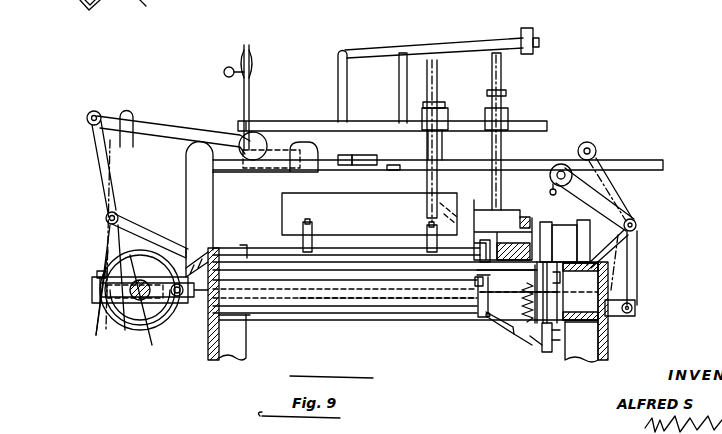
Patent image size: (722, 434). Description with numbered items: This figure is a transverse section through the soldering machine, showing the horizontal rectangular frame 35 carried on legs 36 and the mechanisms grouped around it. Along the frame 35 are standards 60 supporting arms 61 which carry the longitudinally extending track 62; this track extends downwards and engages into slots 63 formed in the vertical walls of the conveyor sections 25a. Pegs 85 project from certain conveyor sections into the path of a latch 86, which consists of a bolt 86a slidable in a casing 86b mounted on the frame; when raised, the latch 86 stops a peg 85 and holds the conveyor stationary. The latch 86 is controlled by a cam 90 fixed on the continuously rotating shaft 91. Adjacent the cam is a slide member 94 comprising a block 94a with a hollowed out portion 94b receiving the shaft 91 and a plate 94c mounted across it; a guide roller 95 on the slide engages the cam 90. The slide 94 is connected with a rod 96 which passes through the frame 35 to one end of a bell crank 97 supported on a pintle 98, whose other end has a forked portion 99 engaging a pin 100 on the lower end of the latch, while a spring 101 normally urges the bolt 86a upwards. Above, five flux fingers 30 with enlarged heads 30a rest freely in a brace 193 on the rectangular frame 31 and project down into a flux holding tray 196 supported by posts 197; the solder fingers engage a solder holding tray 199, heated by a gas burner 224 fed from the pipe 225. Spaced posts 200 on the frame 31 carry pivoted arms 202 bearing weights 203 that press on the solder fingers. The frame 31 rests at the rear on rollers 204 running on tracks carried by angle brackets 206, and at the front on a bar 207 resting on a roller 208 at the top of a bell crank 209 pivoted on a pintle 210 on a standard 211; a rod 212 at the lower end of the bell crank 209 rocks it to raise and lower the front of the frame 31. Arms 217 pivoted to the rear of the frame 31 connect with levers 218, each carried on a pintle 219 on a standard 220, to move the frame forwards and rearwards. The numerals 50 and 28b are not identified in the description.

The conveyor section 25a is at (157, 11).
The arm 217 is at (152, 128).
The lever 218 is at (105, 174).
The pintle 219 is at (120, 214).
The standard 220 is at (132, 230).
The plate 94c is at (98, 272).
The shaft 91 is at (92, 292).
The cam 90 is at (128, 297).
The slide member 94 is at (147, 300).
The block 94a is at (102, 317).
The hollowed out portion 94b is at (160, 297).
The guide roller 95 is at (180, 304).
The frame 35 is at (251, 318).
The leg 36 is at (230, 347).
The rod 96 is at (345, 300).
The pintle 98 is at (478, 325).
The bell crank 97 is at (510, 332).
The forked portion 99 is at (556, 350).
The pin 100 is at (544, 350).
The housing 50 is at (506, 294).
The spring 101 is at (521, 291).
The rod 212 is at (440, 300).
The casing 86b is at (556, 284).
The bolt 86a is at (581, 334).
The peg 85 is at (546, 247).
The latch 86 is at (552, 258).
The standard 60 is at (582, 246).
The arm 61 is at (555, 192).
The track 62 is at (522, 216).
The slot 63 is at (530, 218).
The post 28b is at (480, 247).
The flux holding tray 196 is at (283, 213).
The solder holding tray 199 is at (446, 216).
The flux finger 30 is at (500, 78).
The enlarged head 30a is at (442, 103).
The frame 31 is at (456, 147).
The brace 193 is at (420, 107).
The post 200 is at (392, 68).
The arm 202 is at (401, 56).
The weight 203 is at (529, 28).
The pipe 225 is at (248, 84).
The roller 204 is at (256, 134).
The bracket 206 is at (200, 192).
The bar 207 is at (500, 162).
The gas burner 224 is at (368, 170).
The post 197 is at (312, 243).
The roller 208 is at (584, 143).
The bell crank 209 is at (592, 201).
The pintle 210 is at (636, 225).
The standard 211 is at (613, 243).